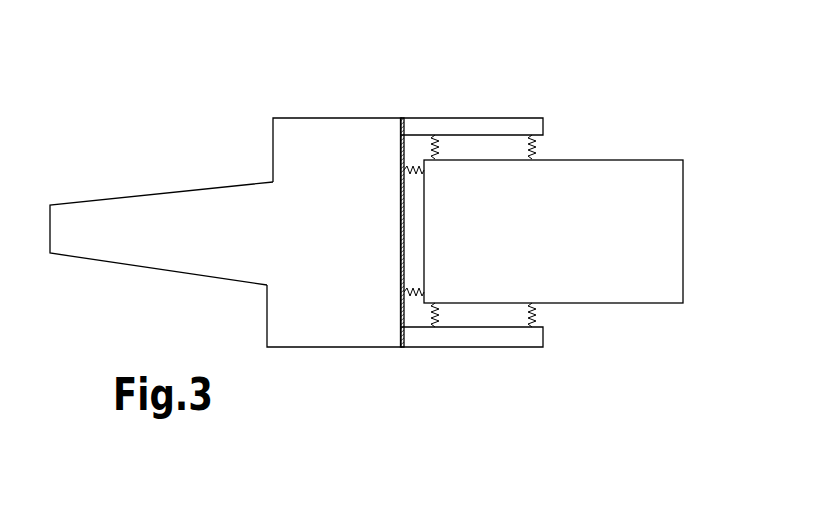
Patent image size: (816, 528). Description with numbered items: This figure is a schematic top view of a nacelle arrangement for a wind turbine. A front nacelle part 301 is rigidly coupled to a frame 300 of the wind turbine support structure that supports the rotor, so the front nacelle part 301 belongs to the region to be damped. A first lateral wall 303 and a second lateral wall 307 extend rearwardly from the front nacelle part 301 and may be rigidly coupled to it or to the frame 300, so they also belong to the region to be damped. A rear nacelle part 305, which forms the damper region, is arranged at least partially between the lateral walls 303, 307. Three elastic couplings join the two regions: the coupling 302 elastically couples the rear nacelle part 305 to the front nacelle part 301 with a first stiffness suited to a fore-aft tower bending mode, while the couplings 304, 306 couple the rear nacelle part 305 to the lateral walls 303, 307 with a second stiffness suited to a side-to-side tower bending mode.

The frame 300 is at (148, 217).
The front nacelle part 301 is at (335, 147).
The elastic coupling 302 is at (413, 167).
The first lateral wall 303 is at (474, 128).
The elastic coupling 304 is at (540, 150).
The rear nacelle part 305 is at (662, 218).
The elastic coupling 306 is at (540, 318).
The second lateral wall 307 is at (473, 338).